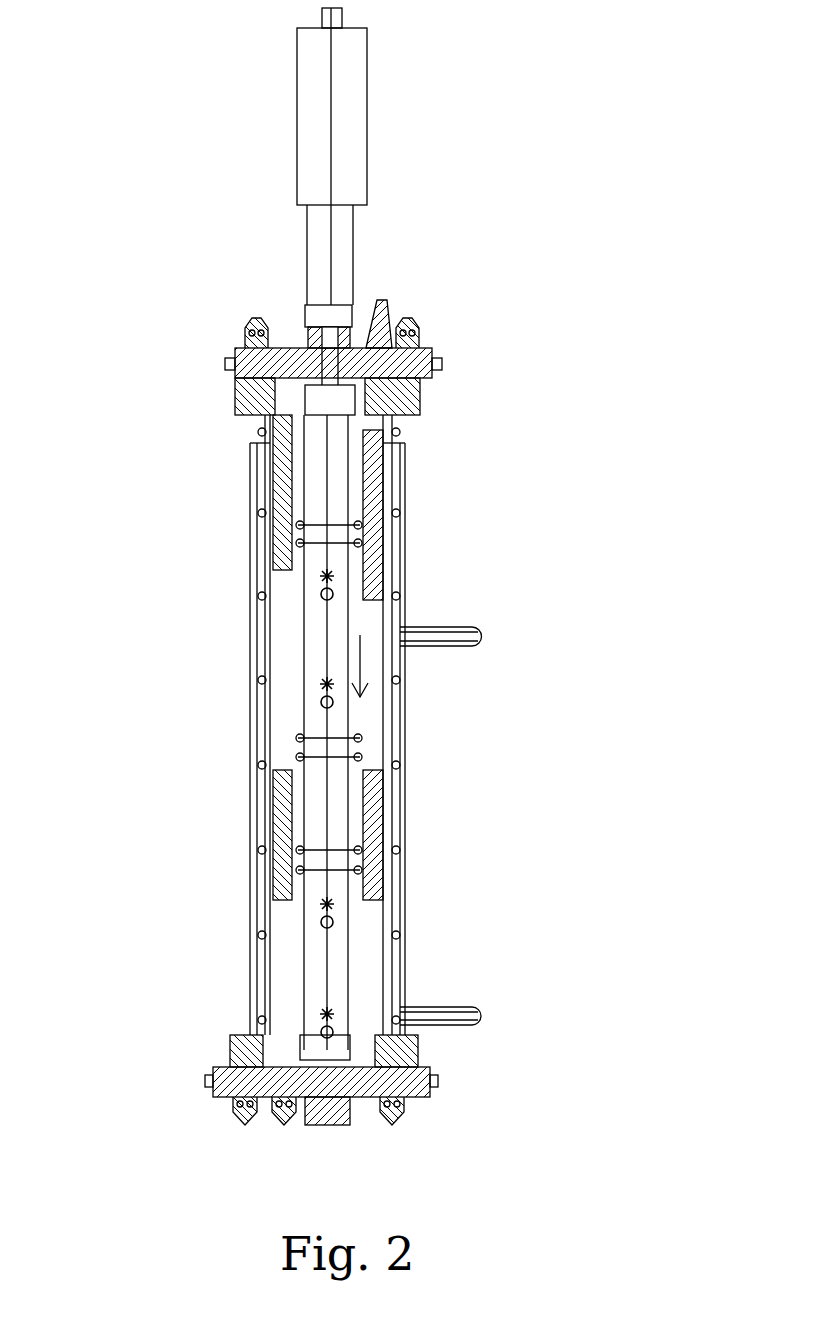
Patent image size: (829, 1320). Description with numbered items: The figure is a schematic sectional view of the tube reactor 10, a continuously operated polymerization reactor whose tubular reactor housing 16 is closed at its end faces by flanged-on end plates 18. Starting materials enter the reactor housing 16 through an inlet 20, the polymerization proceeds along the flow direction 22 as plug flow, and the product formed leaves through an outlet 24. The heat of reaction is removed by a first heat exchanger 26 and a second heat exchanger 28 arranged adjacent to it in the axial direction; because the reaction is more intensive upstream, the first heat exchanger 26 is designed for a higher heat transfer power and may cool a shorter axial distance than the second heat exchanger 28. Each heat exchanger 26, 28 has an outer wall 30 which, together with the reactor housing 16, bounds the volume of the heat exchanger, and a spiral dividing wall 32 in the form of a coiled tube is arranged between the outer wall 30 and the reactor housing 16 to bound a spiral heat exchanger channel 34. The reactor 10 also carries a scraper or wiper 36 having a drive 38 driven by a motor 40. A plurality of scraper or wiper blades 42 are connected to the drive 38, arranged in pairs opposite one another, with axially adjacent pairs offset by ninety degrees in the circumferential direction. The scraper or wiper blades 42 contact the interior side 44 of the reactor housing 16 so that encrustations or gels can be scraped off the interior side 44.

The reactor 10 is at (493, 122).
The tubular reactor housing 16 is at (415, 418).
The end plates 18 is at (420, 350).
The inlet 20 is at (234, 363).
The flow direction 22 is at (368, 652).
The outlet 24 is at (228, 1075).
The first heat exchanger 26 is at (238, 500).
The second heat exchanger 28 is at (248, 978).
The outer wall 30 is at (405, 432).
The spiral dividing wall 32 is at (240, 462).
The spiral heat exchanger channel 34 is at (405, 495).
The scraper or wiper 36 is at (300, 320).
The drive 38 is at (315, 660).
The motor 40 is at (350, 80).
The scraper or wiper blades 42 is at (398, 780).
The interior side 44 is at (405, 568).